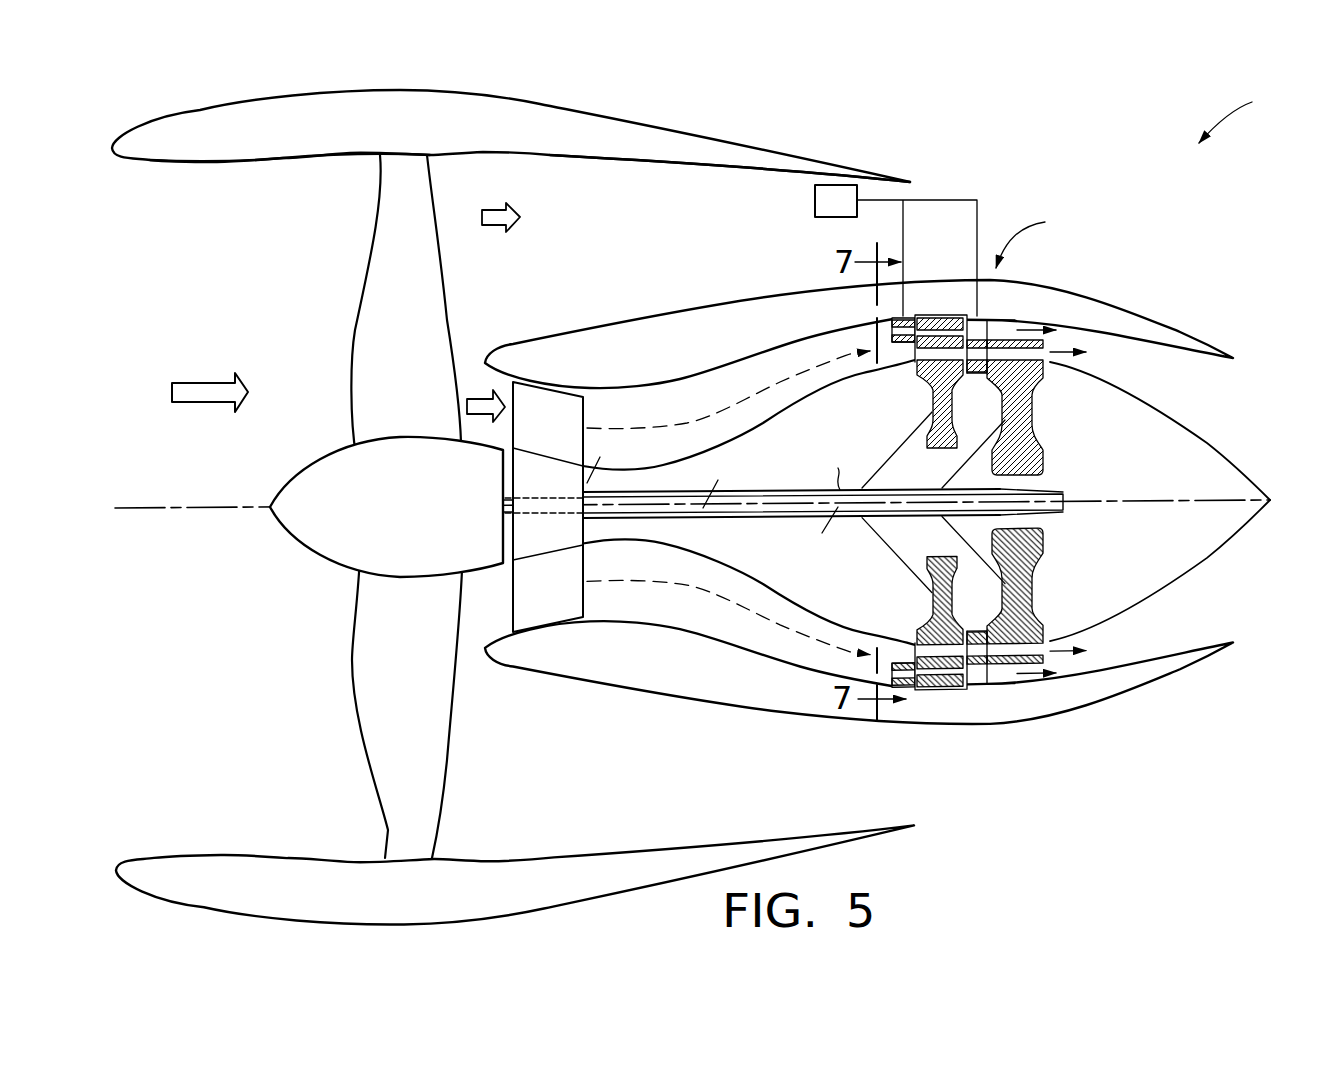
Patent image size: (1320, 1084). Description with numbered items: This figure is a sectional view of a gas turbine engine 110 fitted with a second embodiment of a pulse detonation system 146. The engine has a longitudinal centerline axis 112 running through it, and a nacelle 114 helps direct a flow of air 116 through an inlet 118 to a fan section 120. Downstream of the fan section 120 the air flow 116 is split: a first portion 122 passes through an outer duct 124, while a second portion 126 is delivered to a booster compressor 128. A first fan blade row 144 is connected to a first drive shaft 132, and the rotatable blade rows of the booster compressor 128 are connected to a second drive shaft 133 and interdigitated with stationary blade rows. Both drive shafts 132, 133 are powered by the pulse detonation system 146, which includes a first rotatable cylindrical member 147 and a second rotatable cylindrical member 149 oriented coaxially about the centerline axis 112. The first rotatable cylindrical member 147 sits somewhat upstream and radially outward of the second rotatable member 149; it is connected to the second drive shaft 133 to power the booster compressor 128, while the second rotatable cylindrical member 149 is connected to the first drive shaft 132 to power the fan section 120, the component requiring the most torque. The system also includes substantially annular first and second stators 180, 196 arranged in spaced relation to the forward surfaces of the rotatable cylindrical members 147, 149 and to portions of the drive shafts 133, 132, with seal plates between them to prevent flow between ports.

The gas turbine engine 110 is at (1248, 117).
The longitudinal centerline axis 112 is at (230, 510).
The nacelle 114 is at (200, 112).
The flow of air 116 is at (208, 378).
The inlet 118 is at (188, 166).
The fan section 120 is at (362, 756).
The first portion of air flow 122 is at (505, 231).
The outer duct 124 is at (630, 163).
The second portion of air flow 126 is at (486, 392).
The booster compressor 128 is at (505, 604).
The first drive shaft 132 is at (668, 321).
The second drive shaft 133 is at (703, 490).
The first fan blade row 144 is at (433, 755).
The pulse detonation system 146 is at (1045, 241).
The first rotatable cylindrical member 147 is at (940, 316).
The second rotatable cylindrical member 149 is at (1007, 333).
The first stator 180 is at (907, 343).
The second stator 196 is at (975, 376).